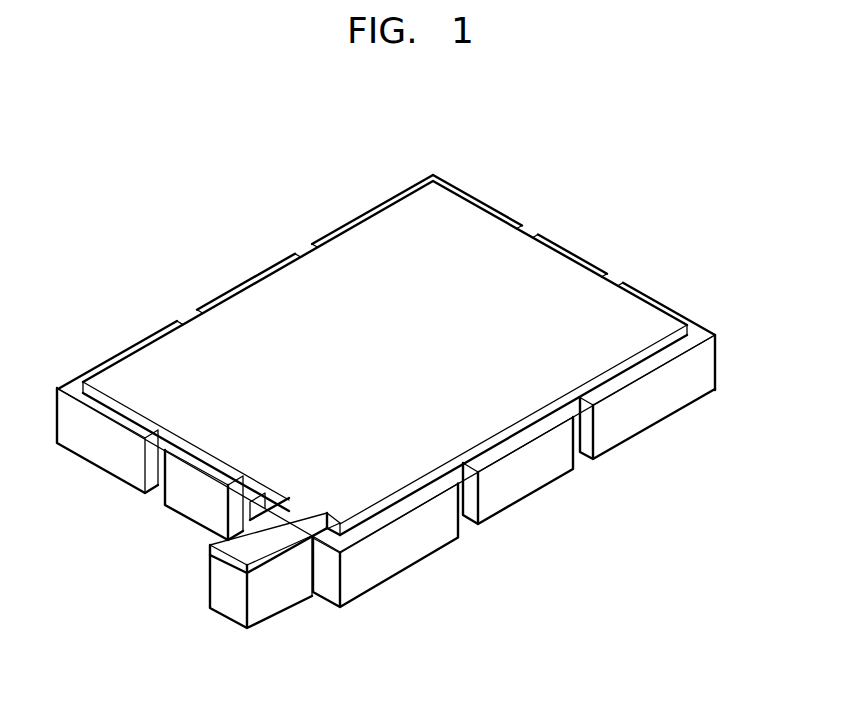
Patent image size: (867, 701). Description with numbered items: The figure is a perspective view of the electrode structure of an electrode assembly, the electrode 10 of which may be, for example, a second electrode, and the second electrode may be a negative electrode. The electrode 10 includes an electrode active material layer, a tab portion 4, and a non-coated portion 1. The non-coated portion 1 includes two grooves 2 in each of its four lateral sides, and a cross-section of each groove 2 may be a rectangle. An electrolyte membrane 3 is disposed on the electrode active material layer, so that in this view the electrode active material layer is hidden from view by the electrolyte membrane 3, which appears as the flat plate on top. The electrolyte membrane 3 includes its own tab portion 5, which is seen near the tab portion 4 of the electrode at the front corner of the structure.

The electrode 10 is at (675, 214).
The electrolyte membrane 3 is at (523, 243).
The non-coated portion 1 is at (394, 562).
The groove 2 is at (587, 442).
The tab portion 4 is at (232, 603).
The tab portion 5 is at (272, 553).